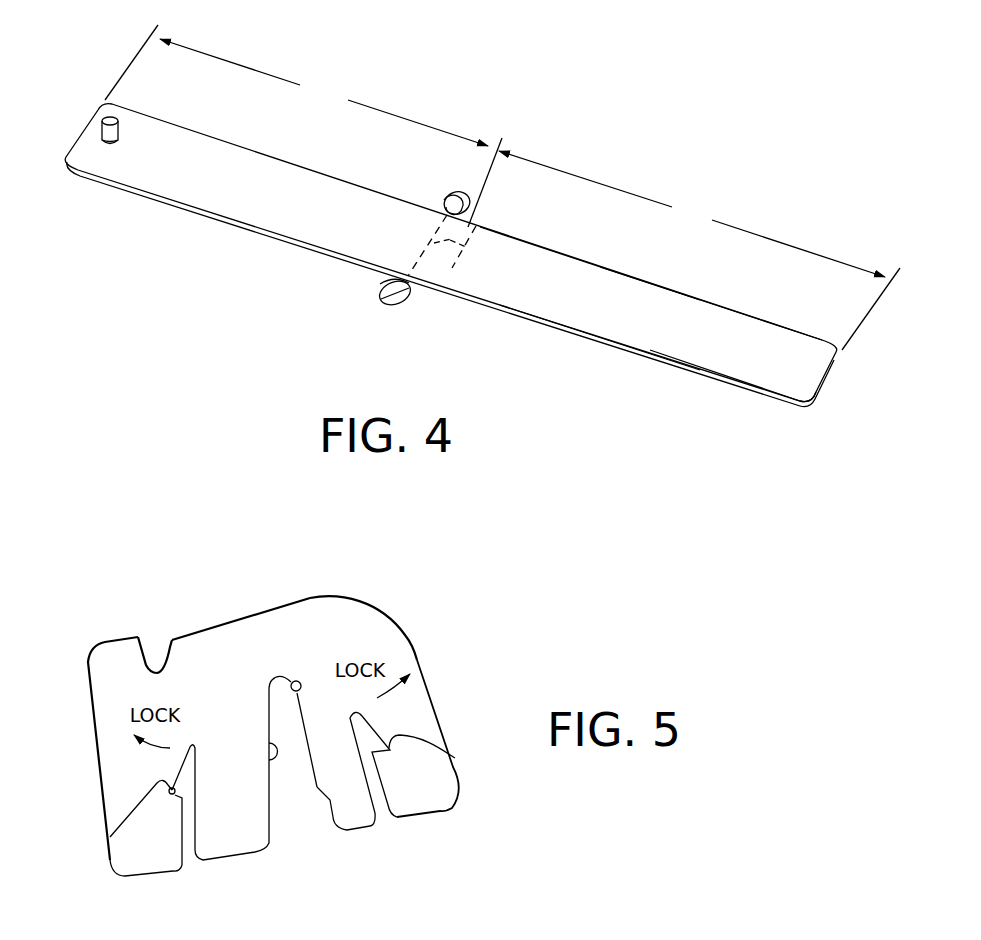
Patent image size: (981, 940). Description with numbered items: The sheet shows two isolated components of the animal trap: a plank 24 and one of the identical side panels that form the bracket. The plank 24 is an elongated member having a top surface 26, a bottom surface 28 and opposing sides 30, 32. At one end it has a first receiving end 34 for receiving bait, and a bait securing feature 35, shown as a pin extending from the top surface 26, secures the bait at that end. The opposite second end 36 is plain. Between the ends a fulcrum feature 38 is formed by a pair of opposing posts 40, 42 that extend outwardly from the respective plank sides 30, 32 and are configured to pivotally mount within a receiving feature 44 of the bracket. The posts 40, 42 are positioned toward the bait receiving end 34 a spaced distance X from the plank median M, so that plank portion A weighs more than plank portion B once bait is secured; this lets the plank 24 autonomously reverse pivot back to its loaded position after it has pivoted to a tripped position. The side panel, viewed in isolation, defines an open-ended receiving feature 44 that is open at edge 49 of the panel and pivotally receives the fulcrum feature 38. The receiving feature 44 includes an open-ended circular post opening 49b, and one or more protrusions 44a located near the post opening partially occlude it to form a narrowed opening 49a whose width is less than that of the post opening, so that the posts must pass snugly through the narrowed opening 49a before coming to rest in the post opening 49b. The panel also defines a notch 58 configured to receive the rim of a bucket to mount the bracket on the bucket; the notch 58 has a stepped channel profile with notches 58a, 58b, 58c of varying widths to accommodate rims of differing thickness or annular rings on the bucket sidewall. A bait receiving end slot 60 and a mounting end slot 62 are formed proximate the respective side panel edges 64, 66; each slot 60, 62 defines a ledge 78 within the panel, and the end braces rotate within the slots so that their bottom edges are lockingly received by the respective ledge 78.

In FIG. 4, the plank 24 is at (247, 276).
In FIG. 4, the top surface 26 is at (563, 267).
In FIG. 4, the bottom surface 28 is at (707, 387).
In FIG. 4, the side 30 is at (597, 345).
In FIG. 4, the side 32 is at (658, 284).
In FIG. 4, the first receiving end 34 is at (81, 139).
In FIG. 4, the bait securing feature 35 is at (102, 137).
In FIG. 4, the second end 36 is at (817, 394).
In FIG. 4, the fulcrum feature 38 is at (390, 320).
In FIG. 4, the post 40 is at (390, 283).
In FIG. 4, the post 42 is at (443, 208).
In FIG. 4, the plank portion A is at (684, 244).
In FIG. 4, the plank portion B is at (296, 85).
In FIG. 4, the spaced distance X is at (457, 223).
In FIG. 4, the plank median M is at (453, 272).
In FIG. 5, the receiving feature 44 is at (169, 642).
In FIG. 5, the protrusion 44a is at (157, 634).
In FIG. 5, the edge 49 is at (196, 620).
In FIG. 5, the narrowed opening 49a is at (152, 637).
In FIG. 5, the circular post opening 49b is at (168, 670).
In FIG. 5, the notch 58 is at (277, 813).
In FIG. 5, the notch 58a is at (297, 680).
In FIG. 5, the notch 58b is at (275, 752).
In FIG. 5, the notch 58c is at (333, 818).
In FIG. 5, the bait receiving end slot 60 is at (185, 853).
In FIG. 5, the mounting end slot 62 is at (385, 813).
In FIG. 5, the side panel edge 64 is at (98, 770).
In FIG. 5, the side panel edge 66 is at (440, 707).
In FIG. 5, the ledge 78 is at (110, 835).